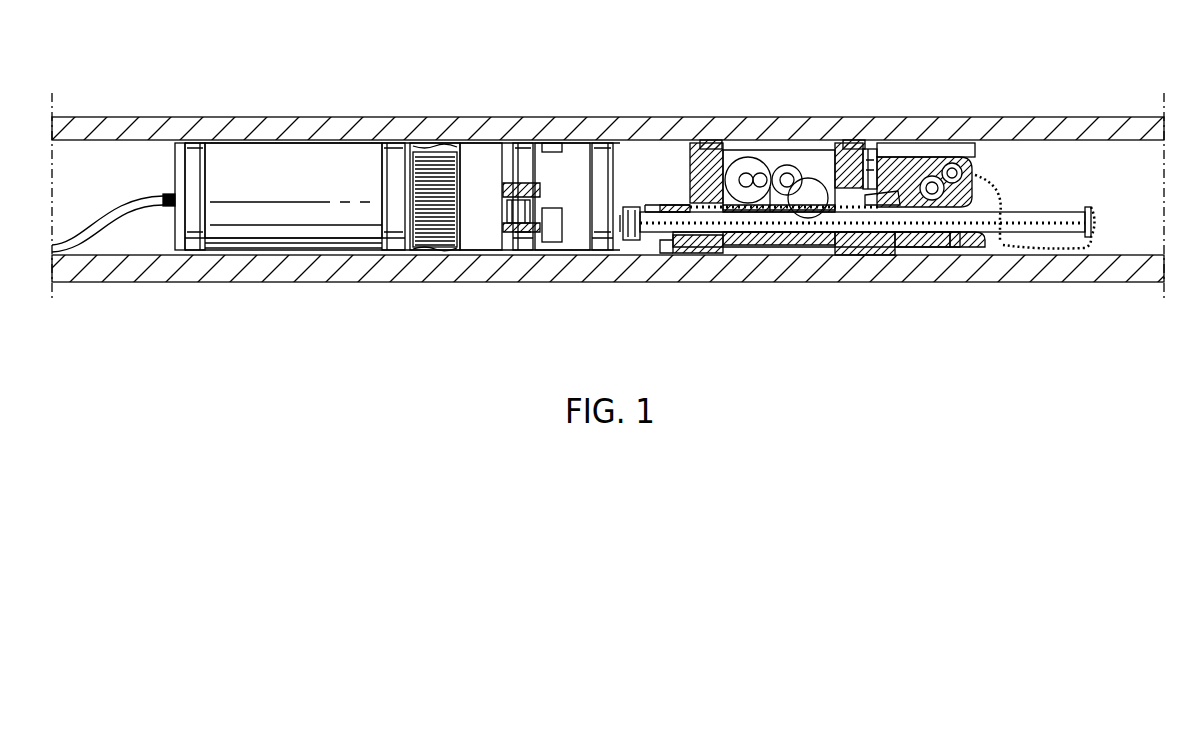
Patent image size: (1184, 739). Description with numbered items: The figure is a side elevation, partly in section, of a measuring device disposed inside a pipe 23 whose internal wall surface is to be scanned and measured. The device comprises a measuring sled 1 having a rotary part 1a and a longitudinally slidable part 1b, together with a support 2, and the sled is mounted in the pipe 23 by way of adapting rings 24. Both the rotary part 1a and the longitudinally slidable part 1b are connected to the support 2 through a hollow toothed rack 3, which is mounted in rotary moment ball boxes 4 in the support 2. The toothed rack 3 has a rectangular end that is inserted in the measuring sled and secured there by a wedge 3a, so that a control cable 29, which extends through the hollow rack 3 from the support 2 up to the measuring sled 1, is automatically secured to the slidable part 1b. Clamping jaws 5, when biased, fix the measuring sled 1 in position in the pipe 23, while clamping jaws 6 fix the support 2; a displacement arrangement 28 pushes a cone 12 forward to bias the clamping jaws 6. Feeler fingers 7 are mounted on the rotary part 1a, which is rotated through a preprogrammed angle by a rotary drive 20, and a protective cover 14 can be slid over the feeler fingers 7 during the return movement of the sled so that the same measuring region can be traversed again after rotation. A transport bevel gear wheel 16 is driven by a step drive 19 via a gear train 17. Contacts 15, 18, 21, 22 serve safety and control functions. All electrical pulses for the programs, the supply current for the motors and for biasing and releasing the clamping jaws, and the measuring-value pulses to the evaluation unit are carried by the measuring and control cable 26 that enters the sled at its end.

The measuring sled 1 is at (240, 242).
The rotary part 1a is at (283, 168).
The longitudinally slidable part 1b is at (553, 178).
The support 2 is at (785, 157).
The hollow toothed rack 3 is at (1040, 212).
The wedge 3a is at (637, 202).
The rotary moment ball boxes 4 is at (677, 245).
The clamping jaws 5 is at (552, 233).
The clamping jaws 6 is at (873, 157).
The feeler fingers 7 is at (445, 247).
The cone 12 is at (905, 193).
The protective cover 14 is at (475, 250).
The contact 15 is at (663, 203).
The transport bevel gear wheel 16 is at (813, 185).
The gear train 17 is at (770, 232).
The contact 18 is at (1081, 207).
The step drive 19 is at (742, 163).
The rotary drive 20 is at (527, 253).
The contact 21 is at (1097, 208).
The contact 22 is at (980, 177).
The pipe 23 is at (472, 127).
The adapting rings 24 is at (197, 140).
The measuring and control cable 26 is at (153, 203).
The displacement arrangement 28 is at (963, 207).
The control cable 29 is at (1013, 247).